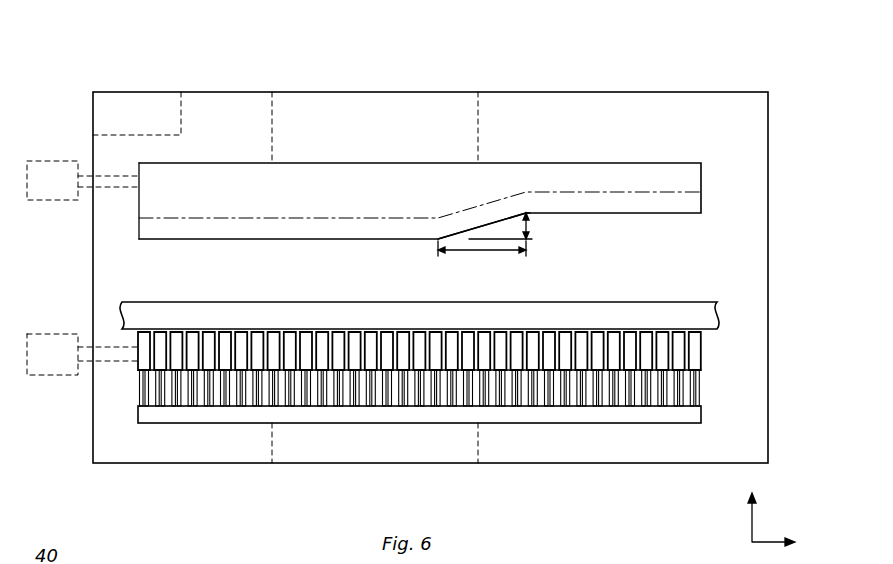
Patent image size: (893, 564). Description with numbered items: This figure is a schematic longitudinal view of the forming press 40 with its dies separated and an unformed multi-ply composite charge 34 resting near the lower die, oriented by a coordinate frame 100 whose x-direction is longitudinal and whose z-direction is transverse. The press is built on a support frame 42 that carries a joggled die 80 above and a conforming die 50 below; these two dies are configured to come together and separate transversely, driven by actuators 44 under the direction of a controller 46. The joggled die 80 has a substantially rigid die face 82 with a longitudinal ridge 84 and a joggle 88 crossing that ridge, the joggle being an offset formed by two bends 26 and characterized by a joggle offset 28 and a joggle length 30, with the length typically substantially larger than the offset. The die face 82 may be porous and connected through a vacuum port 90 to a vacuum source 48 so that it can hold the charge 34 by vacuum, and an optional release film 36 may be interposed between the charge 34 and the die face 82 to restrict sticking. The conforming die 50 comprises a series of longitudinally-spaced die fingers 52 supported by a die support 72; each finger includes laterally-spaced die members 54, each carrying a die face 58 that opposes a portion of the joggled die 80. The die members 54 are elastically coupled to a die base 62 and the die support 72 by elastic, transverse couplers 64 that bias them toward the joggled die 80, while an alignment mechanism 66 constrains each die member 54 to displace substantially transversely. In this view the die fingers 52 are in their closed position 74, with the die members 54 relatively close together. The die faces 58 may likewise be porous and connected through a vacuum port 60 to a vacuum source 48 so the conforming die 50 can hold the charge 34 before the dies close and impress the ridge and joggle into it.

The bends 26 is at (530, 220).
The joggle offset 28 is at (527, 229).
The joggle length 30 is at (489, 254).
The multi-ply composite charge 34 is at (664, 302).
The release film 36 is at (124, 330).
The forming press 40 is at (72, 93).
The support frame 42 is at (232, 92).
The actuators 44 is at (381, 137).
The controller 46 is at (144, 124).
The vacuum source 48 is at (62, 193).
The conforming die 50 is at (127, 387).
The die fingers 52 is at (707, 357).
The die members 54 is at (705, 342).
The die face 58 is at (696, 331).
The vacuum port 60 is at (138, 342).
The die base 62 is at (703, 413).
The elastic, transverse couplers 64 is at (703, 390).
The alignment mechanism 66 is at (704, 374).
The die support 72 is at (657, 423).
The closed position 74 is at (745, 333).
The joggled die 80 is at (121, 211).
The die face 82 is at (677, 212).
The longitudinal ridge 84 is at (702, 201).
The joggle 88 is at (534, 258).
The vacuum port 90 is at (139, 163).
The coordinate frame 100 is at (731, 523).